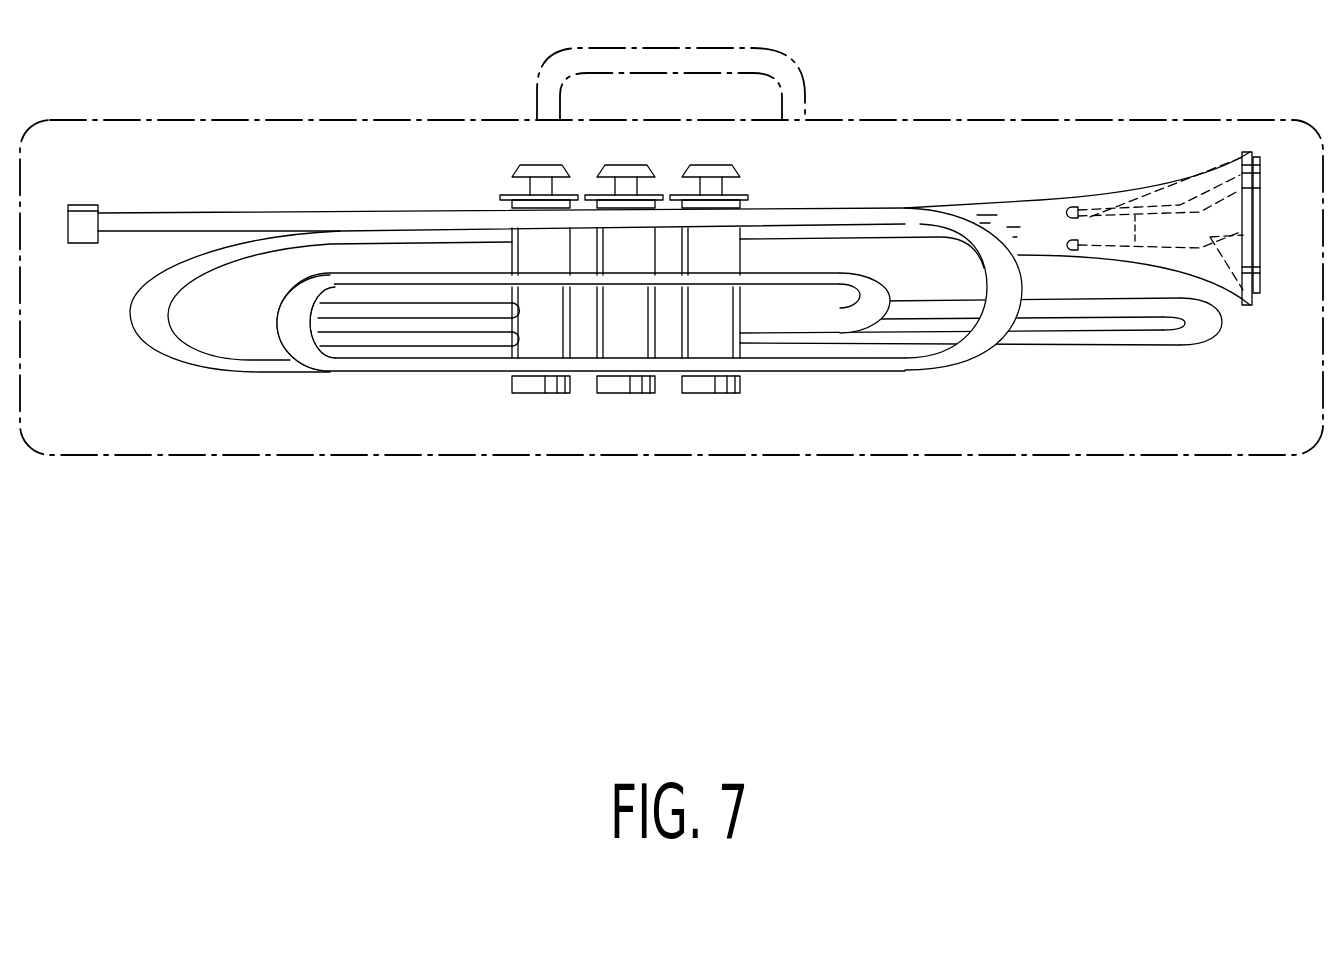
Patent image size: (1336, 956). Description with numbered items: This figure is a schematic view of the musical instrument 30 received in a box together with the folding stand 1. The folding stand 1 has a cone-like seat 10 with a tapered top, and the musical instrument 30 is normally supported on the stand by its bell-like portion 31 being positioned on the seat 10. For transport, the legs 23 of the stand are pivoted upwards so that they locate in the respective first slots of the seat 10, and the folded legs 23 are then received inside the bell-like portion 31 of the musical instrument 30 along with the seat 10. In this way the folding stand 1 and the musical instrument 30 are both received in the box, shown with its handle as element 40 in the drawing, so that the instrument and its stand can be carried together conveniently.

The folding stand 1 is at (1190, 189).
The cone-like seat 10 is at (1264, 167).
The legs 23 is at (1095, 203).
The musical instrument 30 is at (692, 233).
The bell-like portion 31 is at (1257, 303).
The carrying case 40 is at (868, 120).